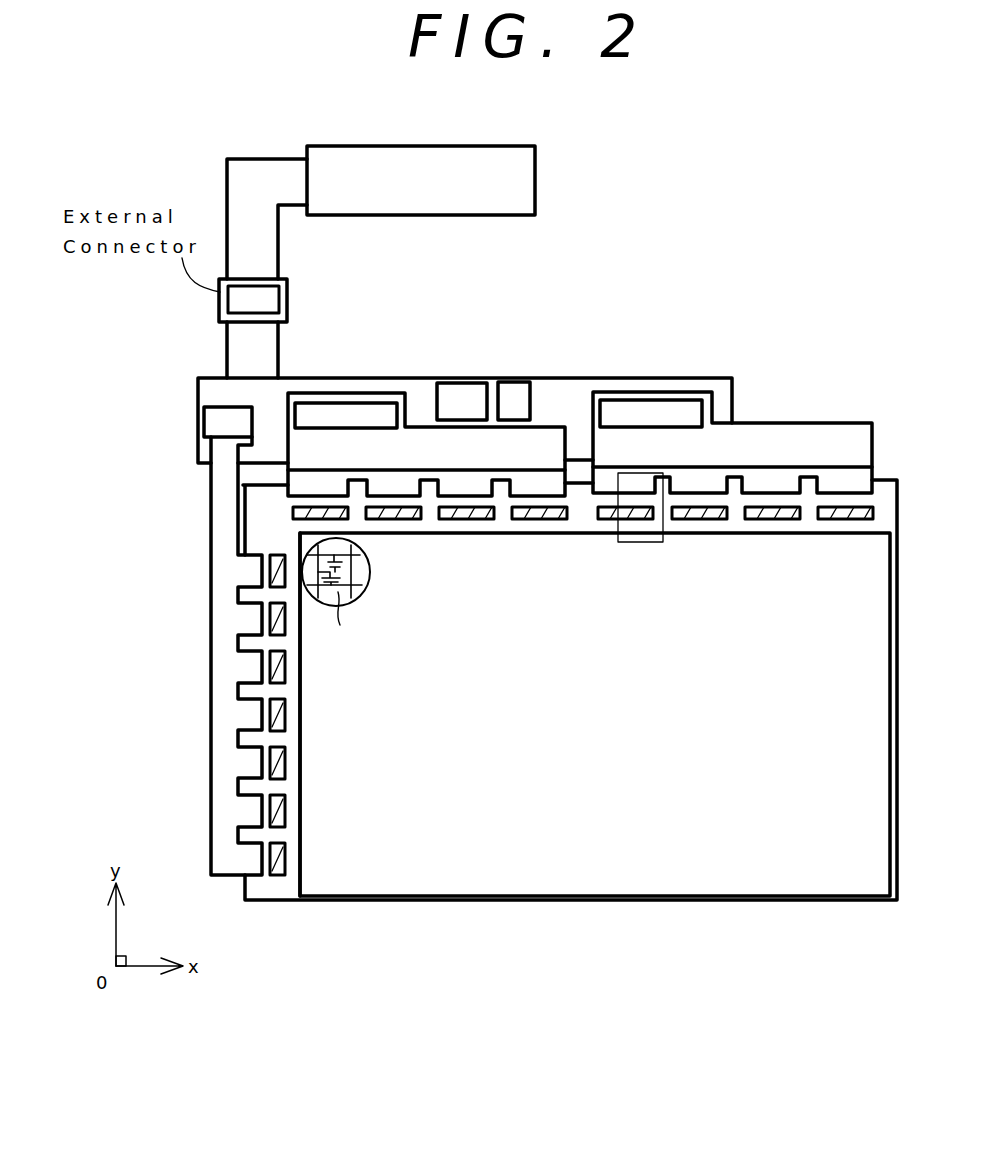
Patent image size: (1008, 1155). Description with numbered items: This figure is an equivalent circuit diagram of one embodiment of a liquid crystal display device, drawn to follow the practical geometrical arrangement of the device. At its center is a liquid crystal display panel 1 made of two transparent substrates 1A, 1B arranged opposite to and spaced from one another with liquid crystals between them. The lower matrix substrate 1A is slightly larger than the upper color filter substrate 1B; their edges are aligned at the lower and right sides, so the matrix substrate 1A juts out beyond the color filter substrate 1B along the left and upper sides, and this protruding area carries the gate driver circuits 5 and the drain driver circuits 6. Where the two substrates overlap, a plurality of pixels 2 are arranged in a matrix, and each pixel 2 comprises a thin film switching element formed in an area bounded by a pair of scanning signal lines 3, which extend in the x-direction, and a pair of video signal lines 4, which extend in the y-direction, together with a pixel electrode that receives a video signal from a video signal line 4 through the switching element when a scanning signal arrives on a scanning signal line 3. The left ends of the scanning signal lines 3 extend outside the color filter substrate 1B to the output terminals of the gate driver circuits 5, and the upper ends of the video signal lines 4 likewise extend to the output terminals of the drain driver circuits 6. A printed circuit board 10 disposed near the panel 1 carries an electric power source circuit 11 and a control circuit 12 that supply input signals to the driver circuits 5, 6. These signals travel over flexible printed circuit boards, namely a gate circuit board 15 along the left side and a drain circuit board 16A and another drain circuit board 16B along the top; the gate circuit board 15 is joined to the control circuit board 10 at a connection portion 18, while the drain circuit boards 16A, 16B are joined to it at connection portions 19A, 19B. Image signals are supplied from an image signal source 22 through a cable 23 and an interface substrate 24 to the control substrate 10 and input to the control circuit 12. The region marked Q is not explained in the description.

The liquid crystal display panel 1 is at (825, 899).
The transparent substrate (matrix substrate) 1A is at (292, 898).
The transparent substrate (color filter substrate) 1B is at (585, 890).
The pixel 2 is at (363, 598).
The scanning signal line 3 is at (363, 578).
The video signal line 4 is at (352, 550).
The gate driver circuit 5 is at (282, 755).
The drain driver circuit 6 is at (547, 515).
The printed circuit board 10 is at (215, 383).
The electric power source circuit 11 is at (512, 390).
The control circuit 12 is at (443, 398).
The gate circuit board 15 is at (227, 875).
The drain circuit board 16A is at (552, 425).
The another drain circuit board 16B is at (765, 433).
The connection portion 18 is at (204, 420).
The connection portion 19A is at (340, 410).
The connection portion 19B is at (640, 408).
The image signal source 22 is at (385, 146).
The cable 23 is at (247, 177).
The interface substrate 24 is at (287, 290).
The region Q is at (642, 543).